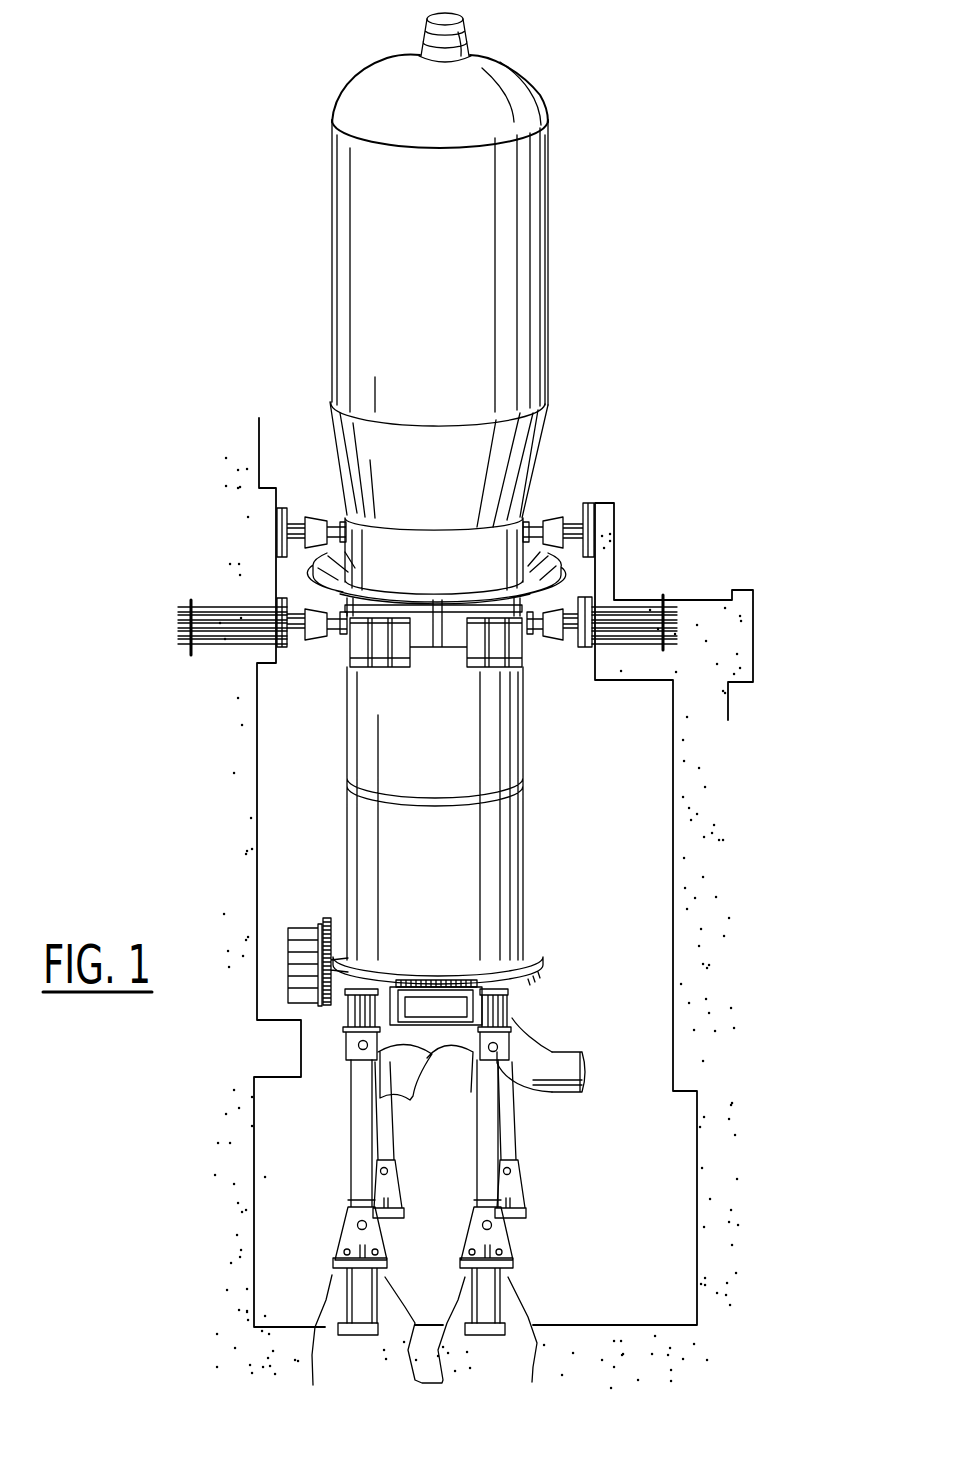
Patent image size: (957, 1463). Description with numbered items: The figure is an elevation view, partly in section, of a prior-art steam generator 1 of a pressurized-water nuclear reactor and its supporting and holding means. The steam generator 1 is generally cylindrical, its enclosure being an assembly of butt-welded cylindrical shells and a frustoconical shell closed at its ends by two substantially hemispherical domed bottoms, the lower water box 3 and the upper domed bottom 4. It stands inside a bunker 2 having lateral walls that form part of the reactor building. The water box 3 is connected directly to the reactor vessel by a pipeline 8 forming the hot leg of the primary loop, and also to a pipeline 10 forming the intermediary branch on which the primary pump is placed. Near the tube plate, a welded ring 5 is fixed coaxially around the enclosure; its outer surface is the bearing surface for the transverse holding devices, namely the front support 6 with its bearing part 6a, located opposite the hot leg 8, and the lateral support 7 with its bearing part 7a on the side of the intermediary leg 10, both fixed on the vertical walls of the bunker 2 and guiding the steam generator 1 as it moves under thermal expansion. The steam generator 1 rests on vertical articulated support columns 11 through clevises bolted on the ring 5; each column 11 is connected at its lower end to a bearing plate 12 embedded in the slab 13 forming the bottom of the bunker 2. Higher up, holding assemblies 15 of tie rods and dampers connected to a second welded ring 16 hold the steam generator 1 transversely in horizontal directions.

The steam generator 1 is at (486, 303).
The bunker 2 is at (712, 808).
The water box 3 is at (513, 1015).
The domed bottom 4 is at (520, 90).
The welded ring 5 is at (535, 948).
The front support 6 is at (302, 952).
The bearing part 6a is at (332, 933).
The lateral support 7 is at (453, 1010).
The bearing part 7a is at (425, 980).
The pipeline 8 is at (540, 1070).
The pipeline 10 is at (410, 1085).
The articulated support columns 11 is at (362, 1126).
The bearing plate 12 is at (500, 1245).
The slab 13 is at (316, 1280).
The holding assemblies 15 is at (574, 485).
The welded ring 16 is at (320, 575).